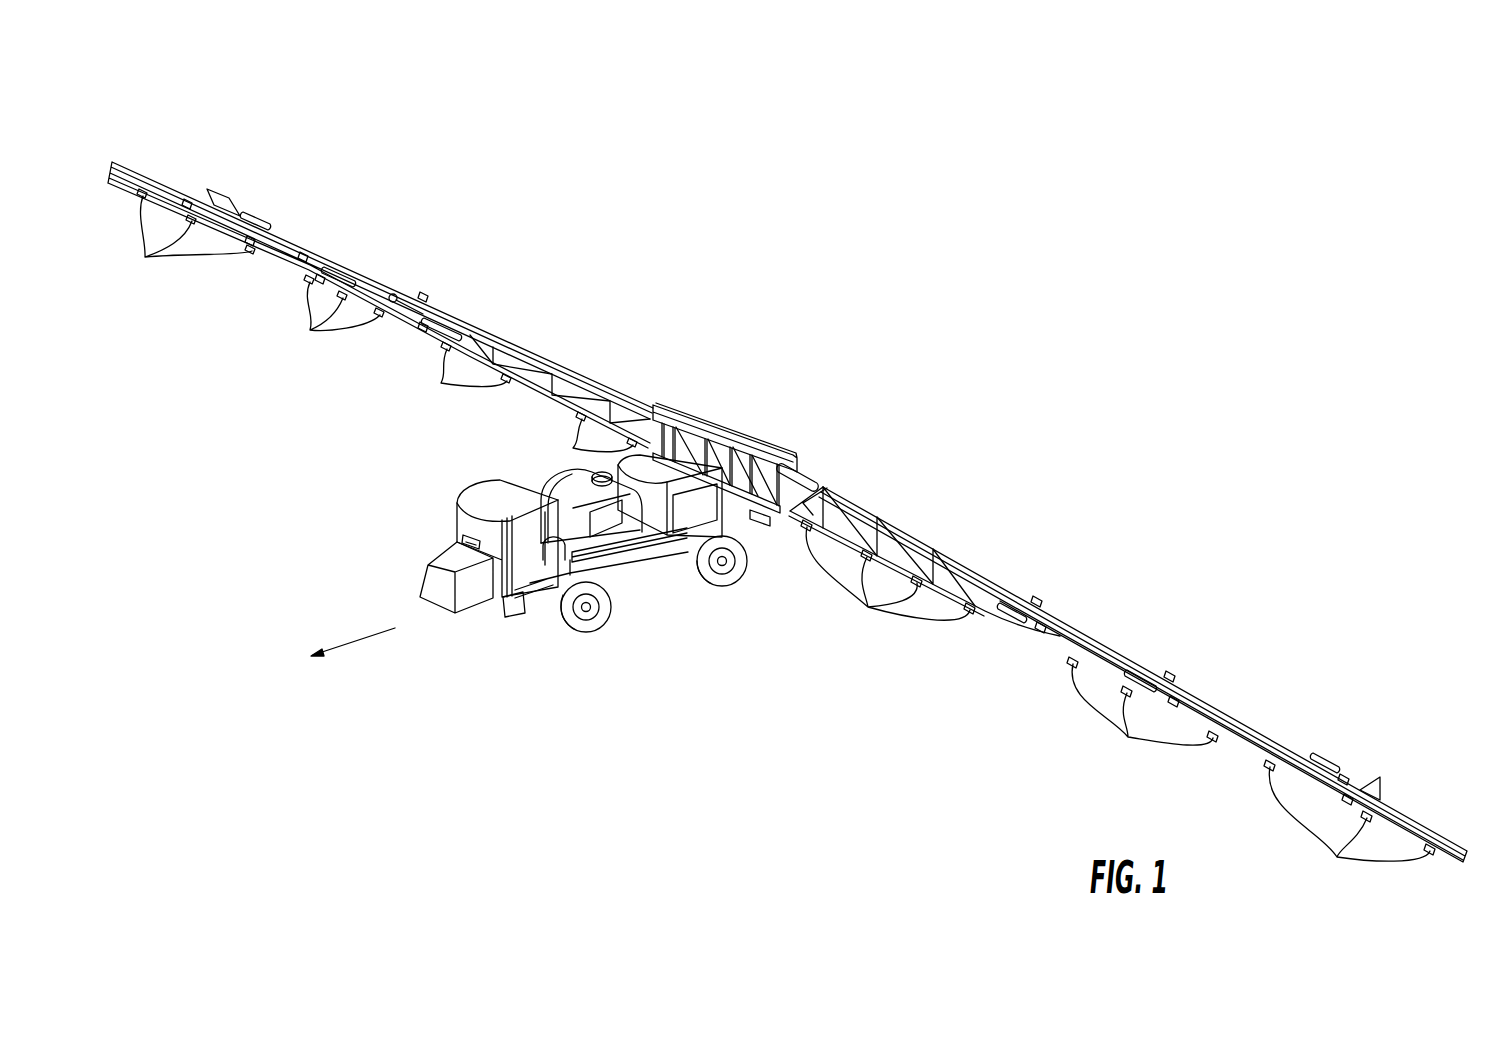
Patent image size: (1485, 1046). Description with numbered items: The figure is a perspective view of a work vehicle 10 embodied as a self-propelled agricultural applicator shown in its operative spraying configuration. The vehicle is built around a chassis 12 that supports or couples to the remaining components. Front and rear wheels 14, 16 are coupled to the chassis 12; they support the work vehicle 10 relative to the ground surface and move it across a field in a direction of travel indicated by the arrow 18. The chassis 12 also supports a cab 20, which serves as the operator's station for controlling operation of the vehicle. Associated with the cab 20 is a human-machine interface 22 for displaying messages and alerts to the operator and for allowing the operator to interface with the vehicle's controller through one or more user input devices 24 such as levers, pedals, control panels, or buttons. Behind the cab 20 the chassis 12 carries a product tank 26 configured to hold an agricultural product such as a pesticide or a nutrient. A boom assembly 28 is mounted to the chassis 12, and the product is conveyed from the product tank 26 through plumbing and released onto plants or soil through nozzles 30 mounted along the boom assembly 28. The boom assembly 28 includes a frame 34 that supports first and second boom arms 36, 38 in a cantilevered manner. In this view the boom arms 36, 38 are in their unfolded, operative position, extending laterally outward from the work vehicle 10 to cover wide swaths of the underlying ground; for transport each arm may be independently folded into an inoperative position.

The work vehicle 10 is at (178, 148).
The chassis 12 is at (622, 573).
The front wheels 14 is at (583, 636).
The rear wheels 16 is at (713, 587).
The arrow 18 is at (358, 641).
The cab 20 is at (480, 500).
The human-machine interface 22 is at (460, 524).
The user input devices 24 is at (468, 527).
The product tank 26 is at (562, 473).
The boom assembly 28 is at (851, 465).
The nozzles 30 is at (441, 383).
The frame 34 is at (743, 427).
The first boom arm 36 is at (967, 554).
The second boom arm 38 is at (520, 340).